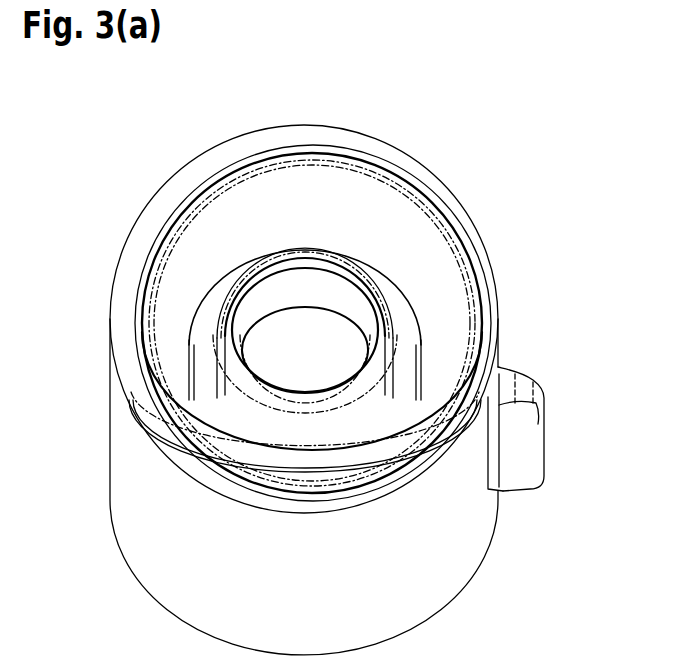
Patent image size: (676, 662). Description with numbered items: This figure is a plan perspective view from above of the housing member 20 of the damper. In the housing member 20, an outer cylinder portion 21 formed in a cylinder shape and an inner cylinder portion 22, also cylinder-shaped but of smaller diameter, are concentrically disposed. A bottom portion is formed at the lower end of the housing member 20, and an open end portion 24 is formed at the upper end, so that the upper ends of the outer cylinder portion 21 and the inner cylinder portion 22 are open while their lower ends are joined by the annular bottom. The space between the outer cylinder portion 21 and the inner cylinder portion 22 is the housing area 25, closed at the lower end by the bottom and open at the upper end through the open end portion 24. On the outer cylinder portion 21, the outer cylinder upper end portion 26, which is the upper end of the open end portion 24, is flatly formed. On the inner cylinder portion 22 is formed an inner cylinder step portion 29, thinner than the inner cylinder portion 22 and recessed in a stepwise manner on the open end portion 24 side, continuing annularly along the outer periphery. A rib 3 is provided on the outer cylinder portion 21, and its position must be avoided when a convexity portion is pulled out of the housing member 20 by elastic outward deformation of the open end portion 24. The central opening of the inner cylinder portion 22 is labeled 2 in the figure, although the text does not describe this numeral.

The housing member 20 is at (112, 175).
The outer cylinder portion 21 is at (137, 473).
The open end portion 24 is at (426, 157).
The outer cylinder upper end portion 26 is at (128, 258).
The housing area 25 is at (236, 250).
The inner cylinder step portion 29 is at (404, 380).
The inner cylinder portion 22 is at (371, 288).
The bore 2 is at (303, 353).
The rib 3 is at (524, 443).